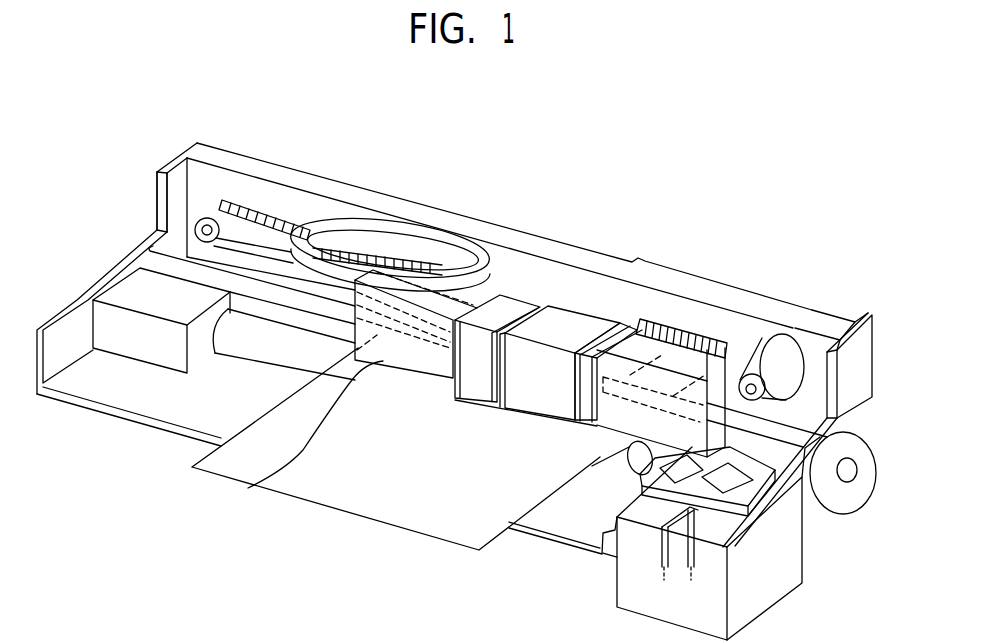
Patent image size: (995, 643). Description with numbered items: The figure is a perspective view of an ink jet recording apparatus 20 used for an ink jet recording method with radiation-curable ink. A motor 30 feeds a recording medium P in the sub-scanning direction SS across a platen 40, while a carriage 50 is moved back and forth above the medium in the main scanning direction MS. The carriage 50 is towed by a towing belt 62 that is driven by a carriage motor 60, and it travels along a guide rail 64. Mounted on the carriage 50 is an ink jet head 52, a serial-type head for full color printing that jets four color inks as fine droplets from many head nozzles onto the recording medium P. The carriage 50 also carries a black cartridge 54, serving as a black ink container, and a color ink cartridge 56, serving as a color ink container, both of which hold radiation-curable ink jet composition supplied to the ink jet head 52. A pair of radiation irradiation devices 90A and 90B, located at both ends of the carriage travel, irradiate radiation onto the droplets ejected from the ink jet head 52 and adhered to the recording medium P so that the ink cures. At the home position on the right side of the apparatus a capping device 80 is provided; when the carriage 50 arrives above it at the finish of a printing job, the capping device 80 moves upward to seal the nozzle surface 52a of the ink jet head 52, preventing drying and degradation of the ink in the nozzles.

The ink jet recording apparatus 20 is at (688, 190).
The motor 30 is at (850, 481).
The platen 40 is at (250, 350).
The carriage 50 is at (497, 410).
The ink jet head 52 is at (548, 436).
The nozzle surface 52a is at (550, 432).
The black cartridge 54 is at (520, 302).
The color ink cartridge 56 is at (577, 322).
The carriage motor 60 is at (778, 352).
The towing belt 62 is at (243, 228).
The guide rail 64 is at (170, 257).
The capping device 80 is at (708, 452).
The radiation irradiation device 90A is at (386, 360).
The radiation irradiation device 90B is at (625, 426).
The recording medium P is at (452, 513).
The main scanning direction MS is at (469, 417).
The sub-scanning direction SS is at (348, 523).